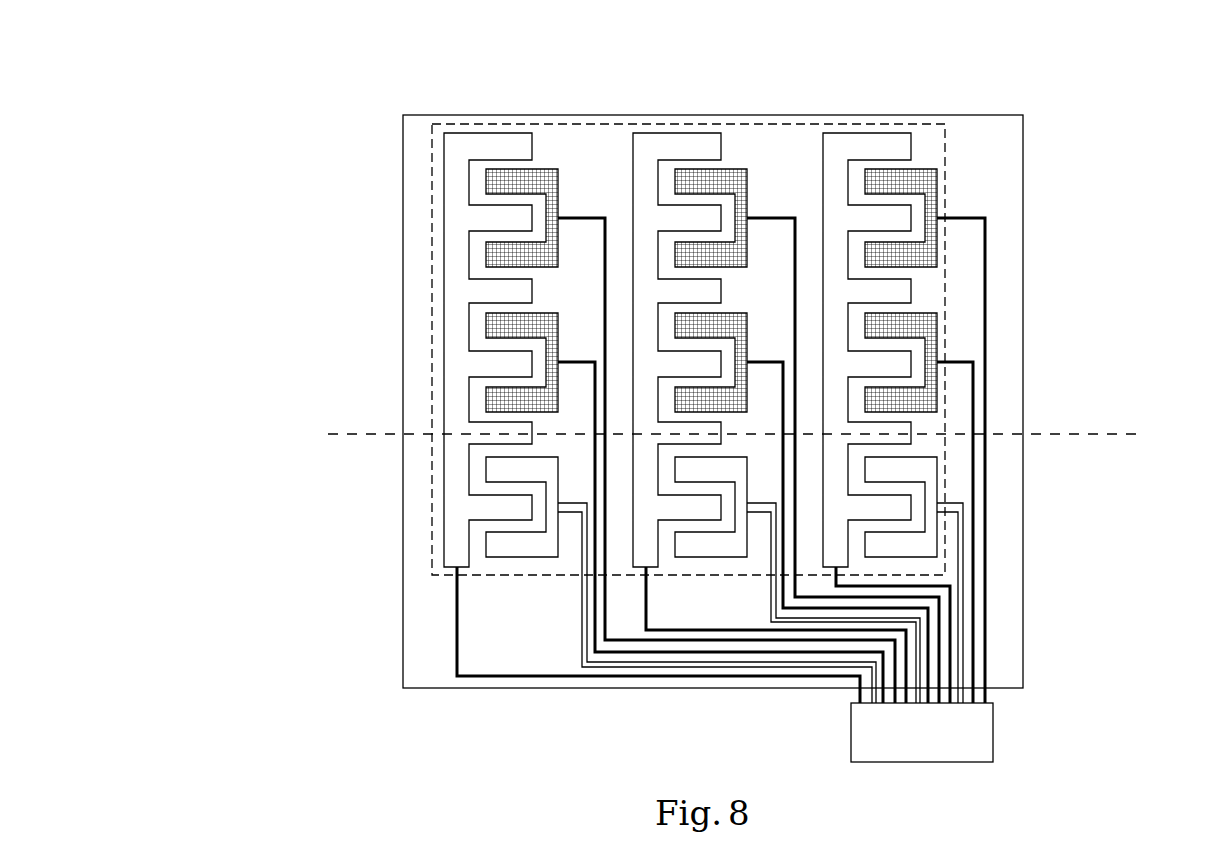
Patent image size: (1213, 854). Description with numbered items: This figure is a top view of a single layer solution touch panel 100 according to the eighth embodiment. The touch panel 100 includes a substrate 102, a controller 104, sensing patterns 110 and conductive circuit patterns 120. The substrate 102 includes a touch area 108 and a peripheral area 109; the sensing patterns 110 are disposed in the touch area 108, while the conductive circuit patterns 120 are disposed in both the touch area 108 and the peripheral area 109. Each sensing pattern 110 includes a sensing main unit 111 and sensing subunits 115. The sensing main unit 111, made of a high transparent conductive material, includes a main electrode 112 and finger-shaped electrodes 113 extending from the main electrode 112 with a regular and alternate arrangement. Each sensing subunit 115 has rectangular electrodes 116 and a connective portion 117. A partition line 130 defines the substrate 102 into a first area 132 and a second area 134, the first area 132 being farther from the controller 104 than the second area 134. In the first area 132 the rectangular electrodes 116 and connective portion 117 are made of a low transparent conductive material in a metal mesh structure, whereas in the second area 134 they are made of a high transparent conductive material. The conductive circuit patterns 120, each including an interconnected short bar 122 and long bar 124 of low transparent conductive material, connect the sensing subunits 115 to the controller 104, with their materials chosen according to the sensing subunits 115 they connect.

The single layer solution touch panel 100 is at (242, 38).
The substrate 102 is at (413, 114).
The controller 104 is at (990, 733).
The touch area 108 is at (604, 163).
The peripheral area 109 is at (1002, 515).
The sensing pattern 110 is at (880, 134).
The sensing main unit 111 is at (490, 292).
The main electrode 112 is at (452, 117).
The finger-shaped electrode 113 is at (511, 118).
The sensing subunit 115 is at (587, 374).
The rectangular electrode 116 is at (728, 150).
The connective portion 117 is at (748, 208).
The conductive circuit pattern 120 is at (812, 457).
The short bar 122 is at (962, 217).
The long bar 124 is at (778, 495).
The partition line 130 is at (1108, 432).
The first area 132 is at (1016, 369).
The second area 134 is at (1013, 607).